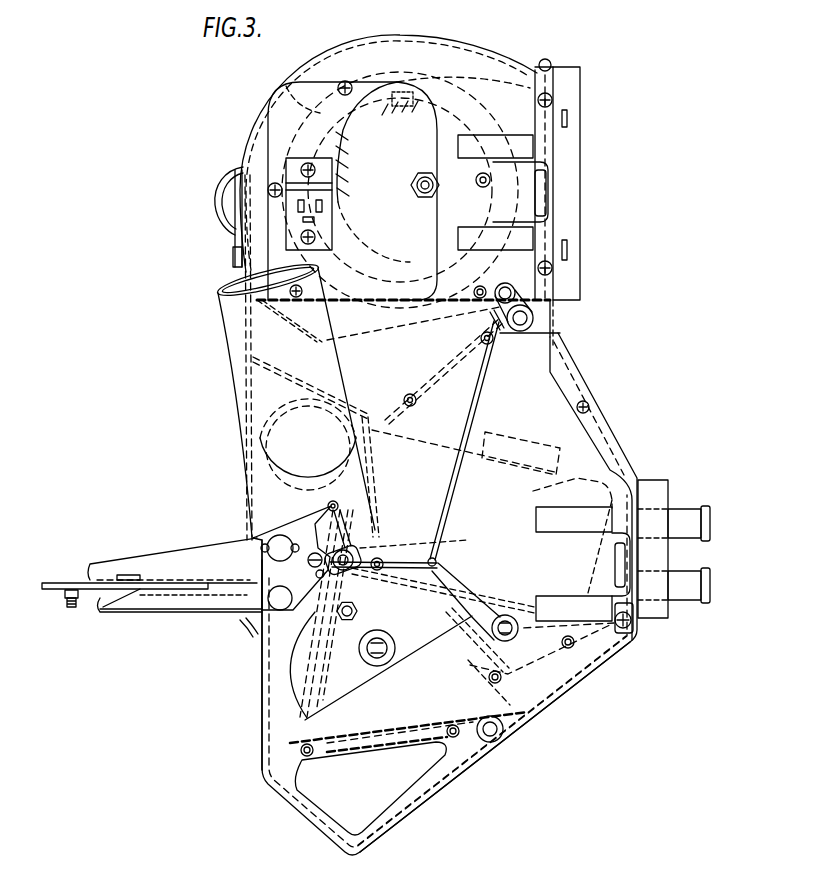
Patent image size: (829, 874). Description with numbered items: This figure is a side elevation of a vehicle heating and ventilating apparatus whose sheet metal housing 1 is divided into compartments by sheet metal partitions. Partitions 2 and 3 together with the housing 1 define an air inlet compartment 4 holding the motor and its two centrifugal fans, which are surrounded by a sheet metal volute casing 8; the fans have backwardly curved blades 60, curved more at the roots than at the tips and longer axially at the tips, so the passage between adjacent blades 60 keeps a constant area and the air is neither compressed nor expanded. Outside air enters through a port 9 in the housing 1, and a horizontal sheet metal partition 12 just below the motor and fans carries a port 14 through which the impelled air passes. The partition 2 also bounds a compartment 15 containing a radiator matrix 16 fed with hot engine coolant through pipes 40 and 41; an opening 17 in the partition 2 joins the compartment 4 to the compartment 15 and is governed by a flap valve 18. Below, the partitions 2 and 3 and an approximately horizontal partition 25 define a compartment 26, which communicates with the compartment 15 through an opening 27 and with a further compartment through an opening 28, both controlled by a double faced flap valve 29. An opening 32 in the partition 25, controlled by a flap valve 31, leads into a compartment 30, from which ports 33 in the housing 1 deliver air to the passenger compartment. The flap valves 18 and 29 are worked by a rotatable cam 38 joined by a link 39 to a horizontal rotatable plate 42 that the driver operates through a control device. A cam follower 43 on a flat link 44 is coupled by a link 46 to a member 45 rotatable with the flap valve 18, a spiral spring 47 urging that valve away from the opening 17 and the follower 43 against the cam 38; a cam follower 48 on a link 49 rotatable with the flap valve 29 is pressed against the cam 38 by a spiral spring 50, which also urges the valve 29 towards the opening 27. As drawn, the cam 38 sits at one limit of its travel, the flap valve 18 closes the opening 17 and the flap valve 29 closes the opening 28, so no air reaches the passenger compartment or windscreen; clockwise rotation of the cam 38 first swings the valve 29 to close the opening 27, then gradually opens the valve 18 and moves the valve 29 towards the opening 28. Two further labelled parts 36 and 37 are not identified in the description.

The sheet metal housing 1 is at (637, 453).
The sheet metal partition 2 is at (387, 410).
The sheet metal partition 3 is at (295, 366).
The air inlet compartment 4 is at (370, 363).
The sheet metal volute casing 8 is at (236, 266).
The port 9 is at (567, 218).
The horizontal sheet metal partition 12 is at (352, 300).
The port 14 is at (272, 503).
The compartment 15 is at (543, 407).
The radiator matrix 16 is at (572, 487).
The opening 17 is at (437, 371).
The flap valve 18 is at (484, 358).
The sheet metal partition 25 is at (282, 747).
The compartment 26 is at (410, 714).
The opening 27 is at (447, 650).
The opening 28 is at (313, 653).
The double faced flap valve 29 is at (333, 688).
The compartment 30 is at (366, 794).
The flap valve 31 is at (440, 735).
The opening 32 is at (347, 740).
The ports 33 is at (420, 785).
The tube 36 is at (228, 344).
The wheel 37 is at (262, 426).
The cam 38 is at (305, 622).
The link 39 is at (160, 616).
The pipe 40 is at (693, 532).
The pipe 41 is at (693, 594).
The horizontal rotatable plate 42 is at (100, 605).
The cam follower 43 is at (448, 587).
The flat link 44 is at (478, 601).
The member 45 is at (523, 281).
The link 46 is at (471, 420).
The spiral spring 47 is at (556, 332).
The cam follower 48 is at (309, 564).
The link 49 is at (340, 528).
The spiral spring 50 is at (360, 550).
The backwardly curved blade 60 is at (340, 148).